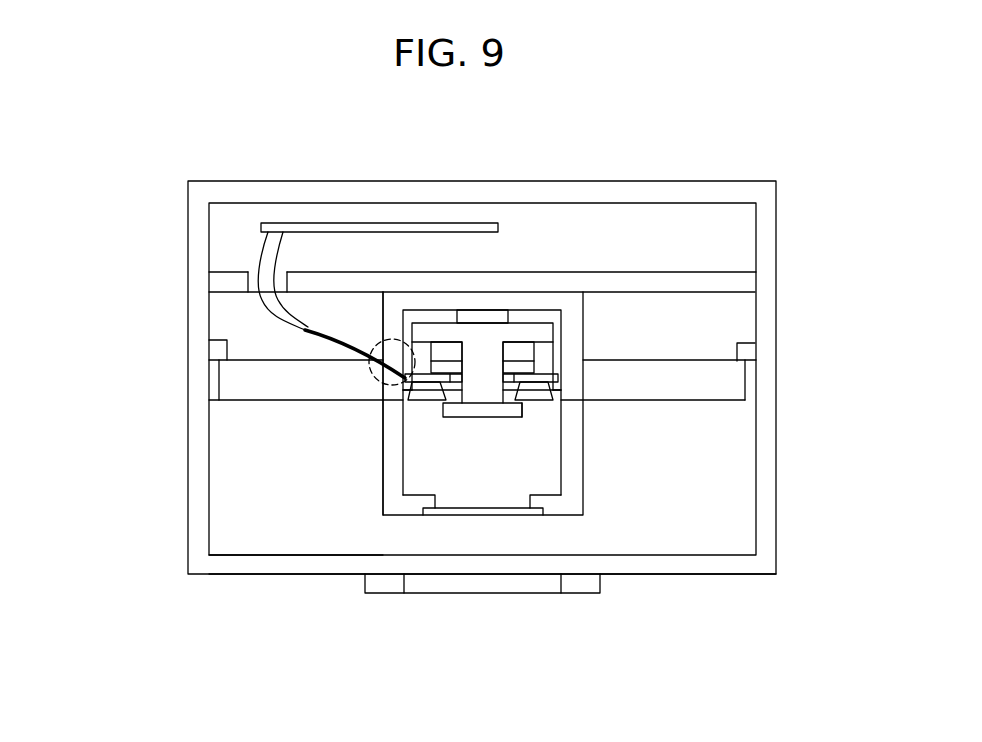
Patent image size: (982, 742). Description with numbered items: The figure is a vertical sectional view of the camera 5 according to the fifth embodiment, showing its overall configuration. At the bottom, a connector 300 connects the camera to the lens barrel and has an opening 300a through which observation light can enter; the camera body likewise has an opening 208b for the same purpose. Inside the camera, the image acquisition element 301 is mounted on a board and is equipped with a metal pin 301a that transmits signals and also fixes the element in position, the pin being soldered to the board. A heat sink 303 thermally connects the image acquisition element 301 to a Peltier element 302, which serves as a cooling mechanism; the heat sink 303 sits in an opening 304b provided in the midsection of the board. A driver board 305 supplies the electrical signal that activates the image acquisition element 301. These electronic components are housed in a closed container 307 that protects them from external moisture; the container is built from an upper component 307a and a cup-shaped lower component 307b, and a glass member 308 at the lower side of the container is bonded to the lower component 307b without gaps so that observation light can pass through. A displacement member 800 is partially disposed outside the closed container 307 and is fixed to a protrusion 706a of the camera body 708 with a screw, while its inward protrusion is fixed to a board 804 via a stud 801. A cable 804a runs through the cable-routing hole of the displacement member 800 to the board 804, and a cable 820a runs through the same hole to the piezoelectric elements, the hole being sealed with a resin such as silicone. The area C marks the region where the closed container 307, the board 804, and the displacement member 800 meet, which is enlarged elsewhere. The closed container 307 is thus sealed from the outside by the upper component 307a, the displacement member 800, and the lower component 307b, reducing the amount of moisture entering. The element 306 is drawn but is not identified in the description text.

The camera 5 is at (746, 163).
The driver board 305 is at (332, 222).
The cable 820a is at (262, 244).
The cable 804a is at (282, 244).
The area C is at (392, 338).
The Peltier element 302 is at (497, 312).
The frame upper block 306 is at (732, 272).
The protrusion 706a is at (218, 352).
The heat sink 303 is at (525, 333).
The displacement member 800 is at (218, 377).
The closed container 307 is at (113, 408).
The upper component 307a is at (383, 294).
The lower component 307b is at (380, 413).
The stud 801 is at (412, 392).
The board 804 is at (560, 380).
The opening 304b is at (528, 383).
The image acquisition element 301 is at (463, 420).
The metal pin 301a is at (532, 400).
The glass member 308 is at (447, 512).
The opening 208b is at (413, 562).
The opening 300a is at (530, 582).
The connector 300 is at (583, 594).
The camera body 708 is at (760, 575).